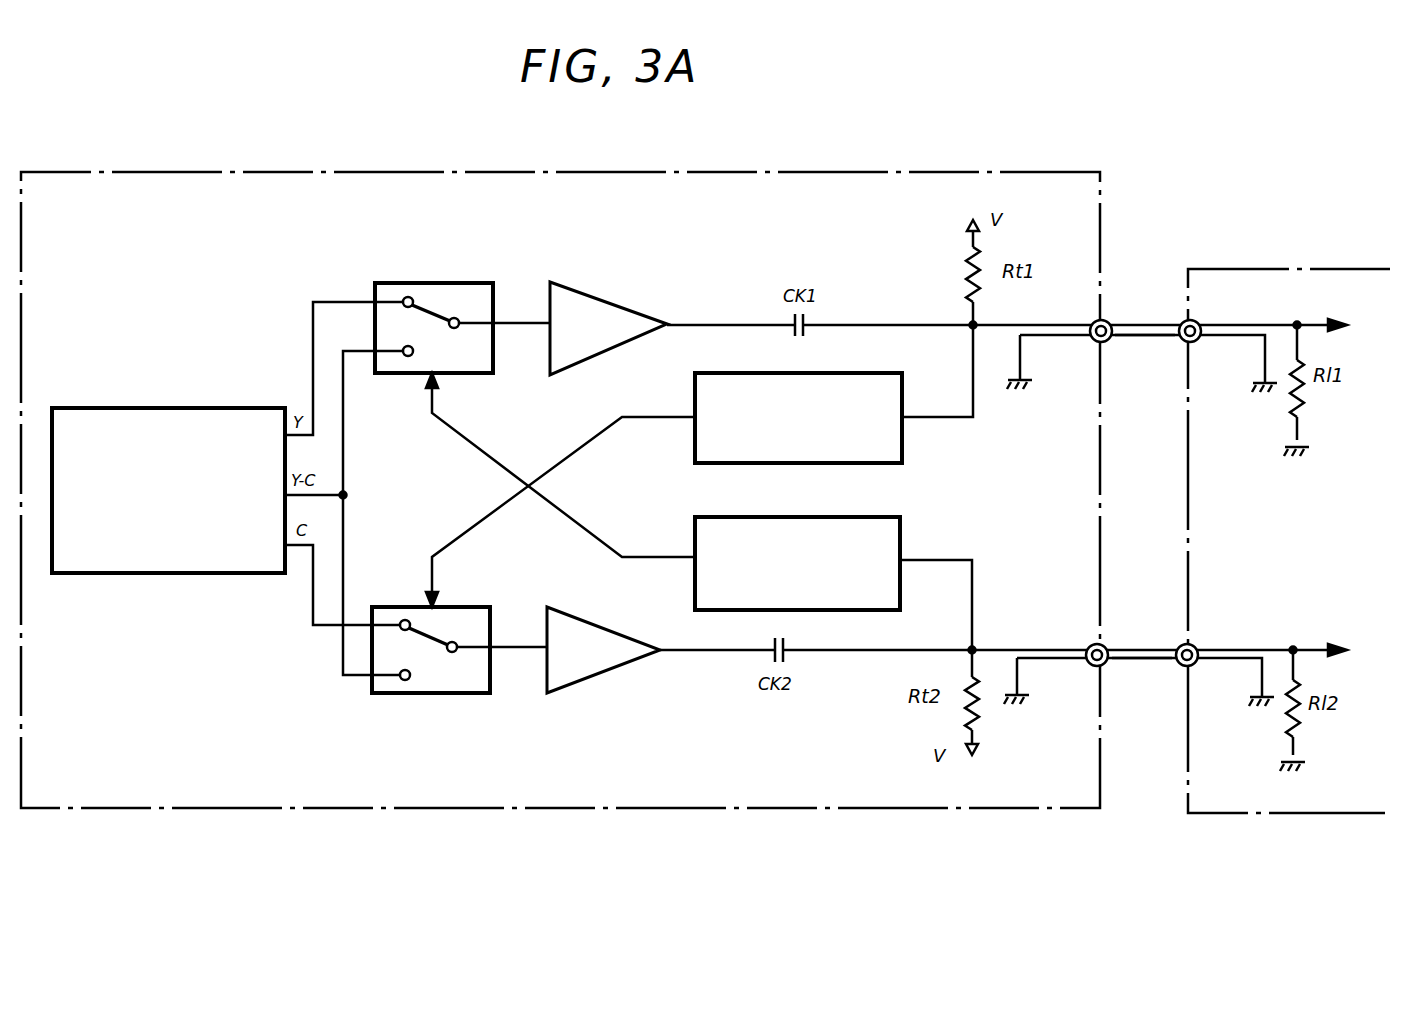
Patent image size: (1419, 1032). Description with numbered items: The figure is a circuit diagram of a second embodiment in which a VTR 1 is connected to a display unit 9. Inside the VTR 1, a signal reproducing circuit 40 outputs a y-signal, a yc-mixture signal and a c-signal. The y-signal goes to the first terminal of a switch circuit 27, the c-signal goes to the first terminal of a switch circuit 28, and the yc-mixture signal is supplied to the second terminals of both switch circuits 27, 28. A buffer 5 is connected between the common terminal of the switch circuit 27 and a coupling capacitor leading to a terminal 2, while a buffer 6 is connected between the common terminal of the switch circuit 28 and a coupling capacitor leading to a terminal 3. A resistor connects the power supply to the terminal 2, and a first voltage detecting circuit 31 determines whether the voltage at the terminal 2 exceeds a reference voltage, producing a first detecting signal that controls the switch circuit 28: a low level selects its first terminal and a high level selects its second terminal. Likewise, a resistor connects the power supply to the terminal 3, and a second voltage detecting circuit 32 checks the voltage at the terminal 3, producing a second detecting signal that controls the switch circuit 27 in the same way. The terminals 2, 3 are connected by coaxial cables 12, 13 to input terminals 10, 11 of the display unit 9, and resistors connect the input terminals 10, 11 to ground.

The VTR 1 is at (673, 172).
The terminal 2 is at (1103, 343).
The terminal 3 is at (1100, 644).
The buffer 5 is at (590, 296).
The buffer 6 is at (585, 620).
The display unit 9 is at (1260, 268).
The input terminal 10 is at (1182, 321).
The input terminal 11 is at (1180, 643).
The coaxial cable 12 is at (1148, 338).
The coaxial cable 13 is at (1140, 662).
The switch circuit 27 is at (412, 283).
The switch circuit 28 is at (436, 607).
The first voltage detecting circuit 31 is at (870, 373).
The second voltage detecting circuit 32 is at (880, 517).
The signal reproducing circuit 40 is at (130, 408).